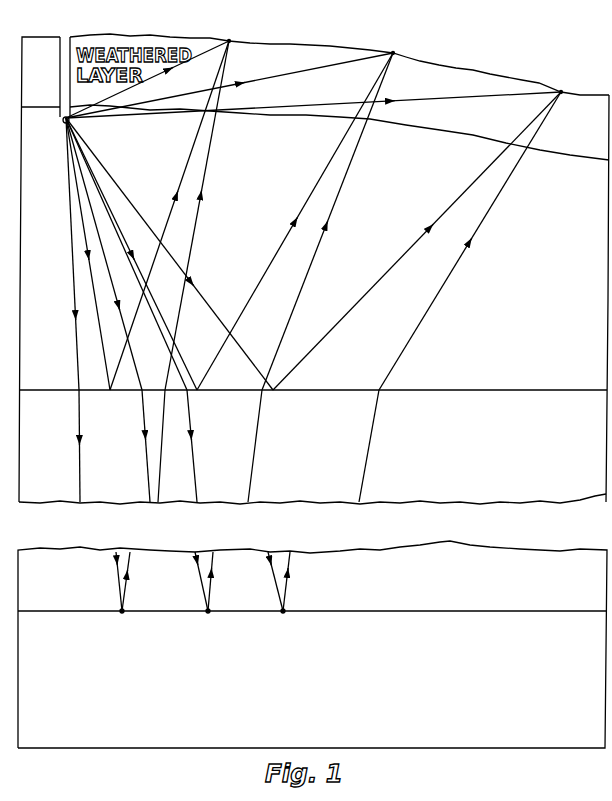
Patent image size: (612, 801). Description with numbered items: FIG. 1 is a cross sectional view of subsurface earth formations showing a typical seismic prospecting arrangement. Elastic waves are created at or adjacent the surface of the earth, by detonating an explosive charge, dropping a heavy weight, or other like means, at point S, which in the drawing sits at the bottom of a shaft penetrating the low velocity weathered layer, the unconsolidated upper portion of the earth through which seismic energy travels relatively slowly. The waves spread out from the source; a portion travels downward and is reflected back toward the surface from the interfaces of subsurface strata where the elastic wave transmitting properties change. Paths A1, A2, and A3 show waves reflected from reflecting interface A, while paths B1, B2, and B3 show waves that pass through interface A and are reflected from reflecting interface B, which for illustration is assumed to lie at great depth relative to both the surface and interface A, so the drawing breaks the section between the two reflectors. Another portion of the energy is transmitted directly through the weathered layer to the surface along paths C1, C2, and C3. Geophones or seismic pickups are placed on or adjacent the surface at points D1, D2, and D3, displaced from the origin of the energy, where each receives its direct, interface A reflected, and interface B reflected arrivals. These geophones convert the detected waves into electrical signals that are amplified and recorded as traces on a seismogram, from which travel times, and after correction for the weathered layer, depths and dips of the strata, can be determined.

The point of seismic energy origin S is at (61, 121).
The geophone point D1 is at (230, 38).
The geophone point D2 is at (393, 50).
The geophone point D3 is at (562, 88).
The direct transmission path C1 is at (166, 72).
The direct transmission path C2 is at (262, 80).
The direct transmission path C3 is at (424, 101).
The reflected wave travel path A1 is at (178, 182).
The reflected wave travel path A2 is at (312, 192).
The reflected wave travel path A3 is at (454, 200).
The reflected wave travel path B1 is at (78, 470).
The reflected wave travel path B2 is at (147, 470).
The reflected wave travel path B3 is at (196, 471).
The reflecting interface A is at (438, 390).
The reflecting interface B is at (417, 611).